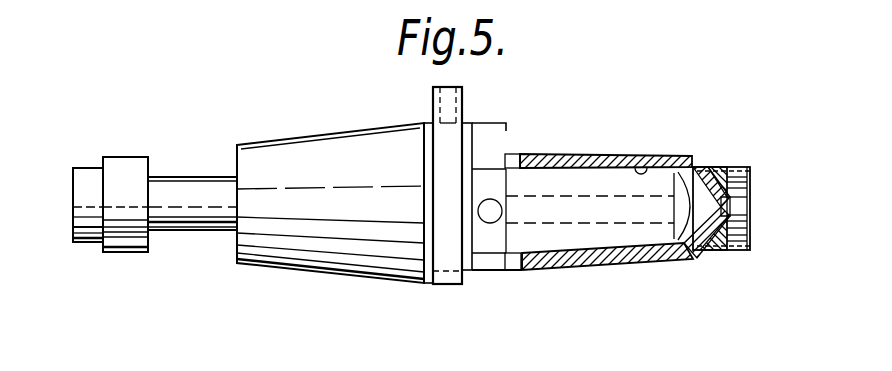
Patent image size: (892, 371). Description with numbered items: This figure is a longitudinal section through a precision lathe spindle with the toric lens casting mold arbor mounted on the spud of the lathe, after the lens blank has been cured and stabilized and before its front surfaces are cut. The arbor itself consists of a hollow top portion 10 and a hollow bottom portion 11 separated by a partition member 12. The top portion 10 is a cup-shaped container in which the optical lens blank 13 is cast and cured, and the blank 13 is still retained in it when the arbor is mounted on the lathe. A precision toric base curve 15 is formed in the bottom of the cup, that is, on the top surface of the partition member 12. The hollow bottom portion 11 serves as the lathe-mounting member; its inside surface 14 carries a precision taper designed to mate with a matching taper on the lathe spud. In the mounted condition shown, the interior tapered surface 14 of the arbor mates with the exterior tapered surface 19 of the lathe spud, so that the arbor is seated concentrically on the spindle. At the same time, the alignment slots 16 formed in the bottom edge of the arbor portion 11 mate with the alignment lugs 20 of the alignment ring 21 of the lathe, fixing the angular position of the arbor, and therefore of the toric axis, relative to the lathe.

The hollow top portion 10 is at (710, 165).
The hollow bottom portion 11 is at (594, 155).
The partition member 12 is at (727, 203).
The optical lens blank 13 is at (750, 231).
The inside surface 14 is at (652, 168).
The toric base curve 15 is at (712, 238).
The alignment slots 16 is at (520, 155).
The exterior tapered surface 19 is at (613, 173).
The alignment lugs 20 is at (510, 153).
The alignment ring 21 is at (485, 272).